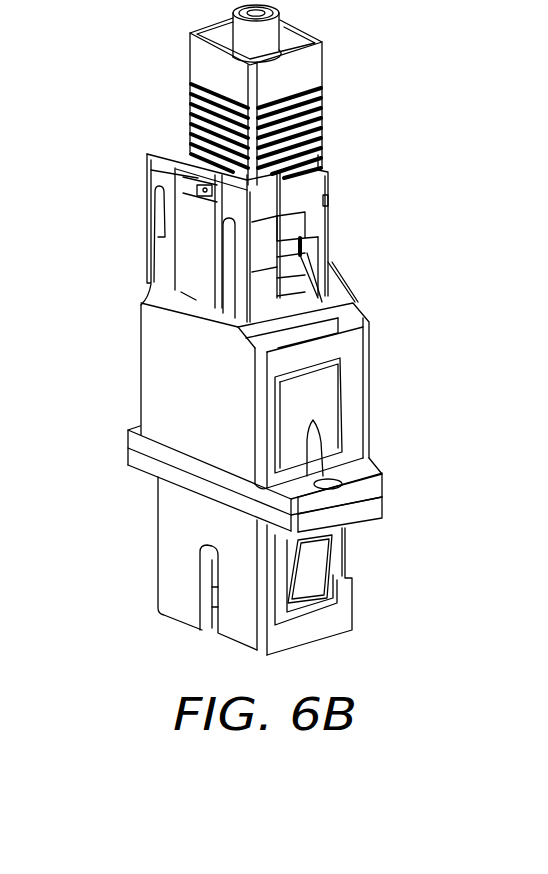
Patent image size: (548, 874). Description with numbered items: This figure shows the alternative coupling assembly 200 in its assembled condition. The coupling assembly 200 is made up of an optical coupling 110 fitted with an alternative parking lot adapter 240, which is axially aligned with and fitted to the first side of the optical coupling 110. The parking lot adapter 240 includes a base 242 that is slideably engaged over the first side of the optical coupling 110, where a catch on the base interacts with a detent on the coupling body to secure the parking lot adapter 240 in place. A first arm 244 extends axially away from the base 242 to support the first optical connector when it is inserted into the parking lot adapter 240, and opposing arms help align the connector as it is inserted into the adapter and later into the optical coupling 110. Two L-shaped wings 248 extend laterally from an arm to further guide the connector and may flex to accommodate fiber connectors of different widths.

The coupling assembly 200 is at (105, 59).
The L-shaped wings 248 is at (233, 190).
The first arm 244 is at (176, 264).
The parking lot adapter 240 is at (106, 382).
The base 242 is at (360, 360).
The optical coupling 110 is at (140, 550).